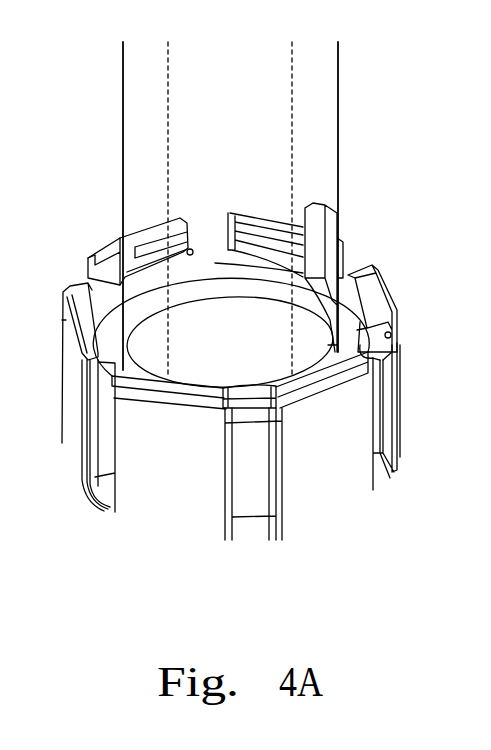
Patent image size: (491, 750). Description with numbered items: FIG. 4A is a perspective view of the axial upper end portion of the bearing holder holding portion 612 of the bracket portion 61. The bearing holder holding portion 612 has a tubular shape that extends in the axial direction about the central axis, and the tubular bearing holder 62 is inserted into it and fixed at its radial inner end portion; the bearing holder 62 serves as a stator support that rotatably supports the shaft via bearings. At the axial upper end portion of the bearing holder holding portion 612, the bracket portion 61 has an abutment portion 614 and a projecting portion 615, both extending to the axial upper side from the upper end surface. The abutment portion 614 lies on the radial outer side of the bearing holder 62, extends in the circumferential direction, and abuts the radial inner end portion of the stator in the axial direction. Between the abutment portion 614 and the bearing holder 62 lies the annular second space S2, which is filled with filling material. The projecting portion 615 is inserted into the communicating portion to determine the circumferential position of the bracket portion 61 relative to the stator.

The bracket portion 61 is at (158, 506).
The bearing holder 62 is at (131, 128).
The bearing holder holding portion 612 is at (97, 502).
The abutment portion 614 is at (367, 283).
The projecting portion 615 is at (328, 230).
The second space S2 is at (116, 300).